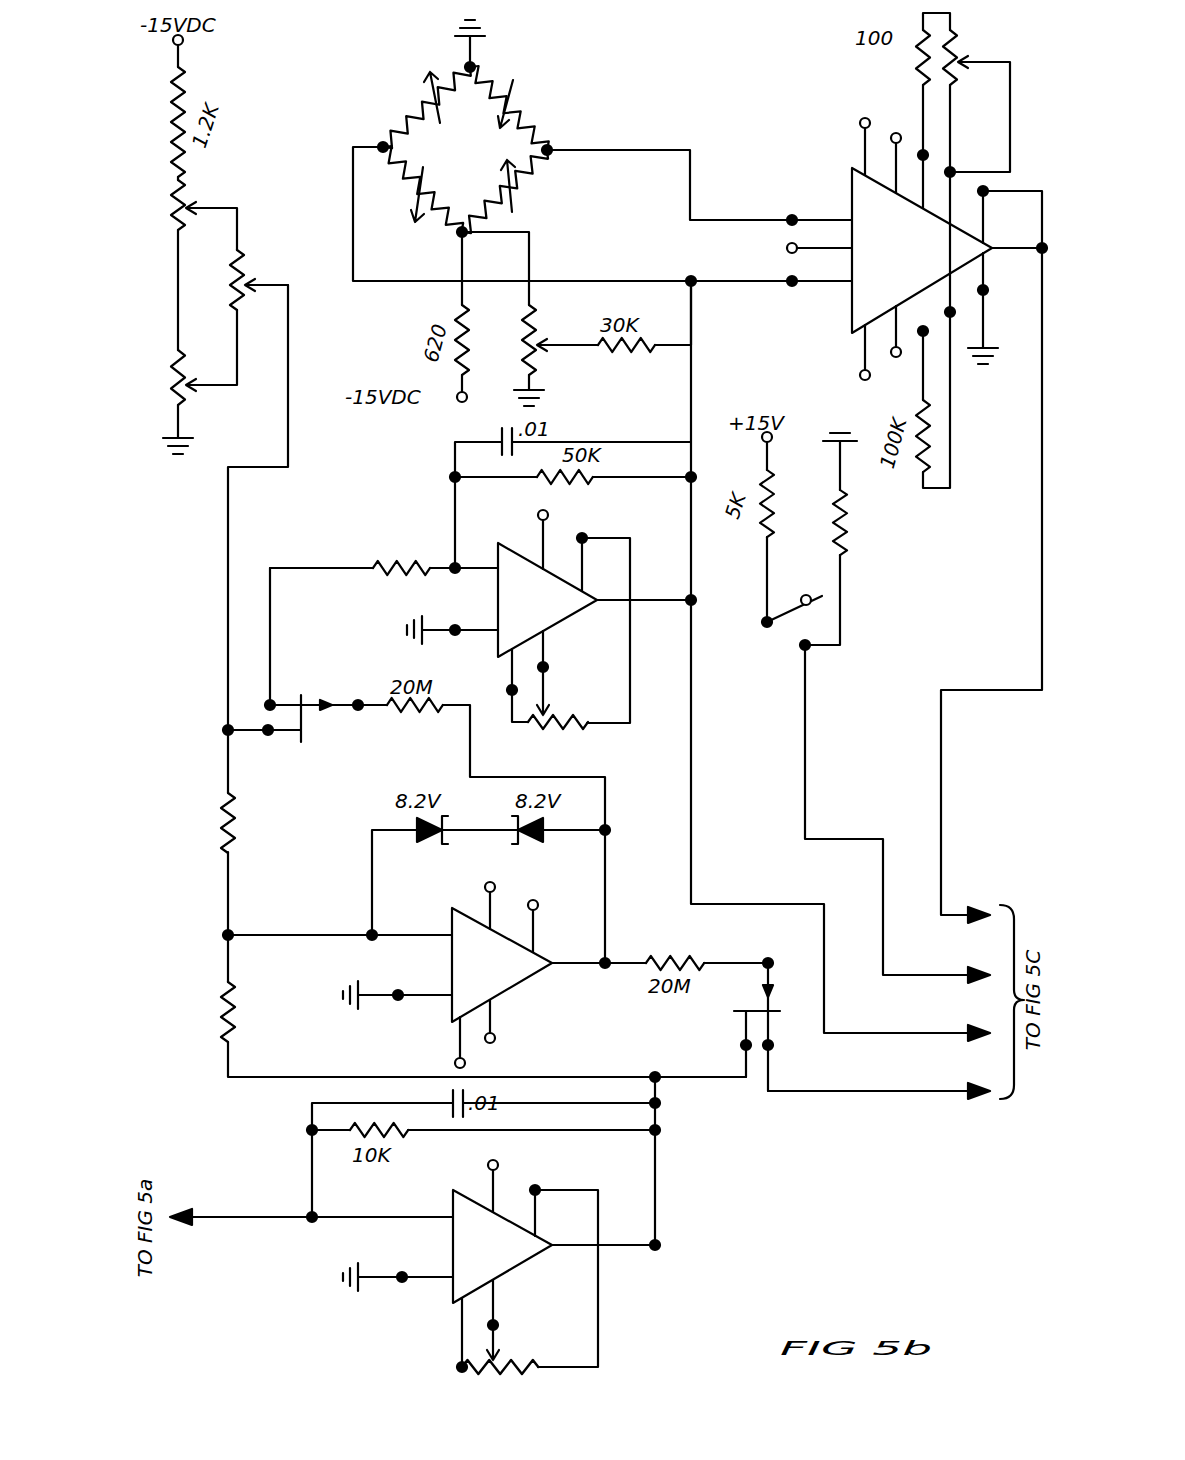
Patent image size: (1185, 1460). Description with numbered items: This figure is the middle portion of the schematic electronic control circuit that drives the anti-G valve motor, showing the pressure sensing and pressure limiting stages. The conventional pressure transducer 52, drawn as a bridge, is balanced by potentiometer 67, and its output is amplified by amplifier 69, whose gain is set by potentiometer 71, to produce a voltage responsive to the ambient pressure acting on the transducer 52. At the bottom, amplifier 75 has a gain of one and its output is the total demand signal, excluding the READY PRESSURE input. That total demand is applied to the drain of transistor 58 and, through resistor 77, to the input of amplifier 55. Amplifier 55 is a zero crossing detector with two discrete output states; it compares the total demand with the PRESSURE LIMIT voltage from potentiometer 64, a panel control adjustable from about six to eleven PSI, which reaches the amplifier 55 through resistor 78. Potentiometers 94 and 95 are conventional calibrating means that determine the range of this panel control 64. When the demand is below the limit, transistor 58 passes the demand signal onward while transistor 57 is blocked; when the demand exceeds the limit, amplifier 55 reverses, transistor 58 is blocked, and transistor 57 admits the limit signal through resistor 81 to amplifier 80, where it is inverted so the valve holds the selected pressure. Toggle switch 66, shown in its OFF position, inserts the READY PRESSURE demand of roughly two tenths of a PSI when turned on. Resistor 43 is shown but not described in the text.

The potentiometer 95 is at (190, 183).
The potentiometer 64 is at (242, 263).
The potentiometer 94 is at (188, 410).
The pressure transducer 52 is at (484, 192).
The potentiometer 67 is at (538, 320).
The amplifier 69 is at (850, 190).
The potentiometer 71 is at (960, 85).
The resistor 81 is at (393, 574).
The amplifier 80 is at (558, 630).
The transistor 57 is at (305, 726).
The resistor 78 is at (240, 842).
The resistor 77 is at (240, 1012).
The amplifier 55 is at (452, 913).
The transistor 58 is at (735, 1025).
The resistor 43 is at (842, 539).
The switch 66 is at (767, 630).
The amplifier 75 is at (448, 1250).